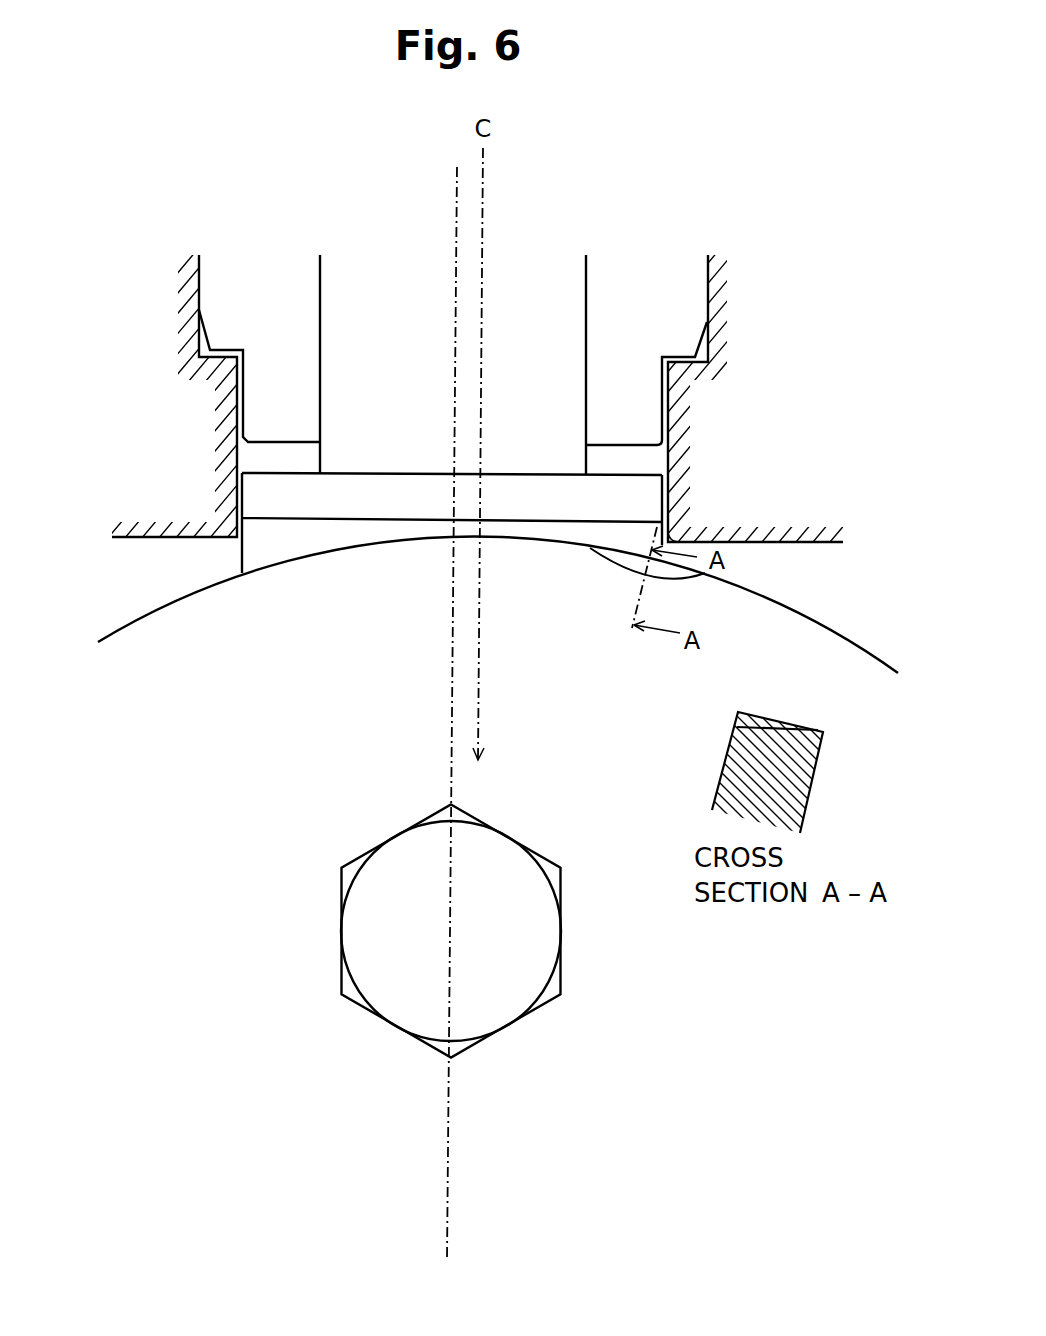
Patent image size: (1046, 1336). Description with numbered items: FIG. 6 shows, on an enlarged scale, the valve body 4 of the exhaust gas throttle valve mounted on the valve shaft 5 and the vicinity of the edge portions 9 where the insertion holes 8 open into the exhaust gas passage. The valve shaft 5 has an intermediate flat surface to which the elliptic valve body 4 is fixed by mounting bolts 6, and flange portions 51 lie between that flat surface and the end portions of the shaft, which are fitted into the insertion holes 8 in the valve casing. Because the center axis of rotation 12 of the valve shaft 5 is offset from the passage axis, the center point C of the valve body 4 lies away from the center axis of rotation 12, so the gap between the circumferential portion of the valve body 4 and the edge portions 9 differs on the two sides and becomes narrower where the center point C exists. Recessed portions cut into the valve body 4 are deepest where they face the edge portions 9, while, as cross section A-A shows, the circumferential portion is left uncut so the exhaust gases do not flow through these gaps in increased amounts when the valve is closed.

The valve body 4 is at (840, 648).
The valve shaft 5 is at (575, 402).
The mounting bolt 6 is at (548, 903).
The insertion hole 8 is at (672, 430).
The edge portion 9 is at (673, 538).
The center axis of rotation 12 is at (457, 218).
The flange portion 51 is at (360, 485).